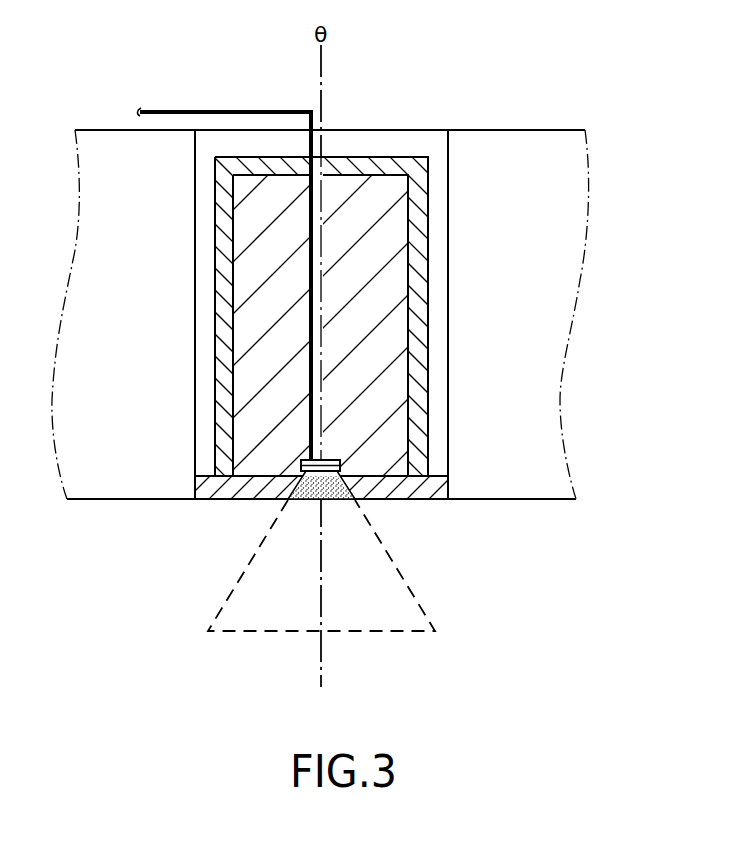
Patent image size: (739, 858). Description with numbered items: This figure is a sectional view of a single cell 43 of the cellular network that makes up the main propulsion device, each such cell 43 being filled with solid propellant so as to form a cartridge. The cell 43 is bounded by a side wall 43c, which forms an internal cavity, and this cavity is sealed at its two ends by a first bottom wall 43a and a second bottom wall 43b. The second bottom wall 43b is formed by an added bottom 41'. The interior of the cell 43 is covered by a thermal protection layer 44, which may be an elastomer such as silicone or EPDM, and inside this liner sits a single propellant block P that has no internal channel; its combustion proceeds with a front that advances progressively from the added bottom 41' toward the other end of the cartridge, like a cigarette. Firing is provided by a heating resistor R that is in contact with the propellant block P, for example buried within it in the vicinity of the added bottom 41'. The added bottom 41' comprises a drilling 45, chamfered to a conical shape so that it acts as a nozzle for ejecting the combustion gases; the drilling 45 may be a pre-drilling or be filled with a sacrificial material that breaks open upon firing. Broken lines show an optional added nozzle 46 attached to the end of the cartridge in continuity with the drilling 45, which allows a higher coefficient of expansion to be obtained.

The cell 43 is at (201, 500).
The first bottom wall 43a is at (398, 142).
The second bottom wall 43b is at (253, 492).
The side wall 43c is at (437, 400).
The added bottom 41' is at (439, 514).
The thermal protection layer 44 is at (417, 207).
The propellant block P is at (392, 282).
The drilling 45 is at (335, 500).
The heating resistor R is at (303, 460).
The added nozzle 46 is at (373, 632).